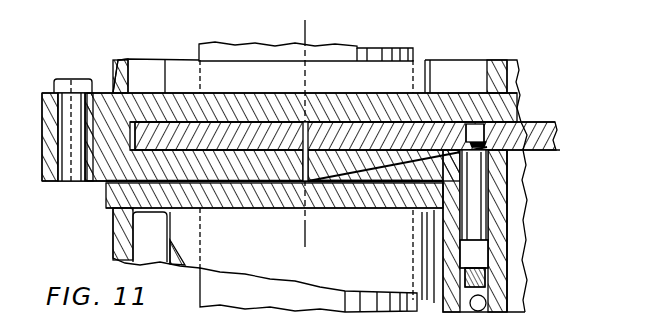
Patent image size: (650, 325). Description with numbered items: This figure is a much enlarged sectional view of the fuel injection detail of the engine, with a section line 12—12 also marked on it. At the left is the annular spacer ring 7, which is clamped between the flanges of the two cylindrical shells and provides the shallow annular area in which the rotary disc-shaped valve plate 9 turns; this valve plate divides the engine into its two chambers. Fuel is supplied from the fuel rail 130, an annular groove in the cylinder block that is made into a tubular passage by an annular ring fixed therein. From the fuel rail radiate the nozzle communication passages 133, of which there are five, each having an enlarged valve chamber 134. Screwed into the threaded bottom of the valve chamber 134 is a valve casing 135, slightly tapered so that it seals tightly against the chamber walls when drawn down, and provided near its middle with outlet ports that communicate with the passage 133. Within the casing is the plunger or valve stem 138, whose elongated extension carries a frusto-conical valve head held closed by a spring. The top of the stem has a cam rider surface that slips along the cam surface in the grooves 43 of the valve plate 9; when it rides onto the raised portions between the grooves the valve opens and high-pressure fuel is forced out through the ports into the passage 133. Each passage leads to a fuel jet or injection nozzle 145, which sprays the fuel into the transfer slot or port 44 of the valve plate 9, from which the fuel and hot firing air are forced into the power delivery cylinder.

The annular spacer ring 7 is at (42, 133).
The section line 12- 12 is at (302, 31).
The transfer slot or port 44 is at (311, 141).
The rotary disc-shaped valve plate 9 is at (490, 148).
The fuel jet or injection nozzle 145 is at (492, 151).
The grooves of the valve plate 43 is at (474, 143).
The plunger or valve stem 138 is at (482, 139).
The nozzle communication passages 133 is at (512, 173).
The valve casing 135 is at (494, 198).
The valve chamber 134 is at (488, 229).
The fuel rail 130 is at (487, 303).